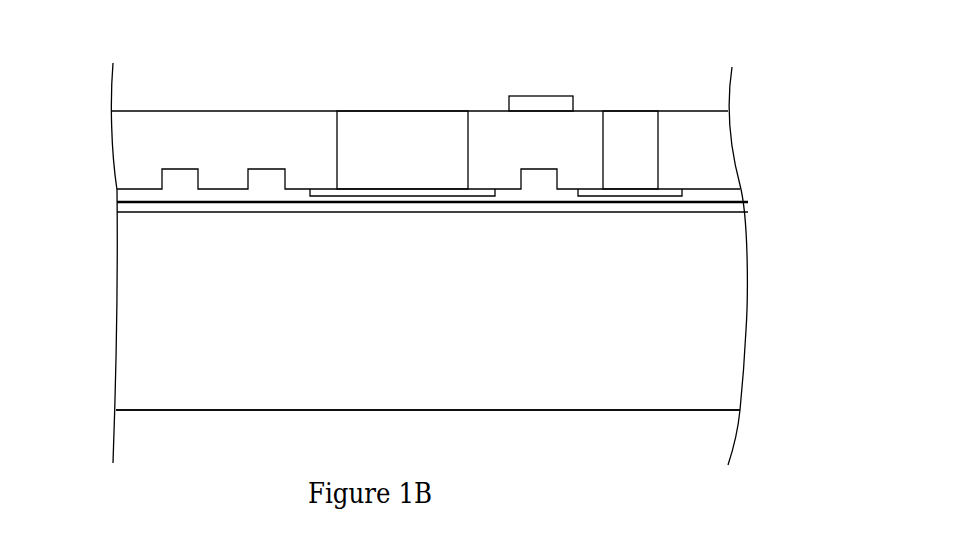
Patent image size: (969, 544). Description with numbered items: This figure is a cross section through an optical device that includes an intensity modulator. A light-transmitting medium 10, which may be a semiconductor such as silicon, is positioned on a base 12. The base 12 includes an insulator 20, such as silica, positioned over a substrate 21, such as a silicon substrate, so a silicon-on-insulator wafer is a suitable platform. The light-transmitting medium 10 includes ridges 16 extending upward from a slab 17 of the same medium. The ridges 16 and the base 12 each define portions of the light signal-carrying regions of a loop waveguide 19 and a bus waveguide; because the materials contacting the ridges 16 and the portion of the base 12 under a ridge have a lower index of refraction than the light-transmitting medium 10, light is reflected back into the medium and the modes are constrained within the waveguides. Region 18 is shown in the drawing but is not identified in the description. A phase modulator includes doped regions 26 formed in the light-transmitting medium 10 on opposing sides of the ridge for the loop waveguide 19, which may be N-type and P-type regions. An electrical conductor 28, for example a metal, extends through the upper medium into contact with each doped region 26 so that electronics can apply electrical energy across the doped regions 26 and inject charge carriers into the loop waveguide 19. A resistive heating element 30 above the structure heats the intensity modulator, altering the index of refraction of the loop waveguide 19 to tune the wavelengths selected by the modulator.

The light-transmitting medium 10 is at (126, 192).
The base 12 is at (109, 199).
The ridges 16 is at (200, 169).
The slab 17 is at (258, 165).
The recess 18 is at (162, 163).
The loop waveguide 19 is at (527, 167).
The insulator 20 is at (191, 211).
The substrate 21 is at (229, 398).
The doped regions 26 is at (353, 190).
The electrical conductor 28 is at (377, 120).
The resistive heating element 30 is at (573, 95).